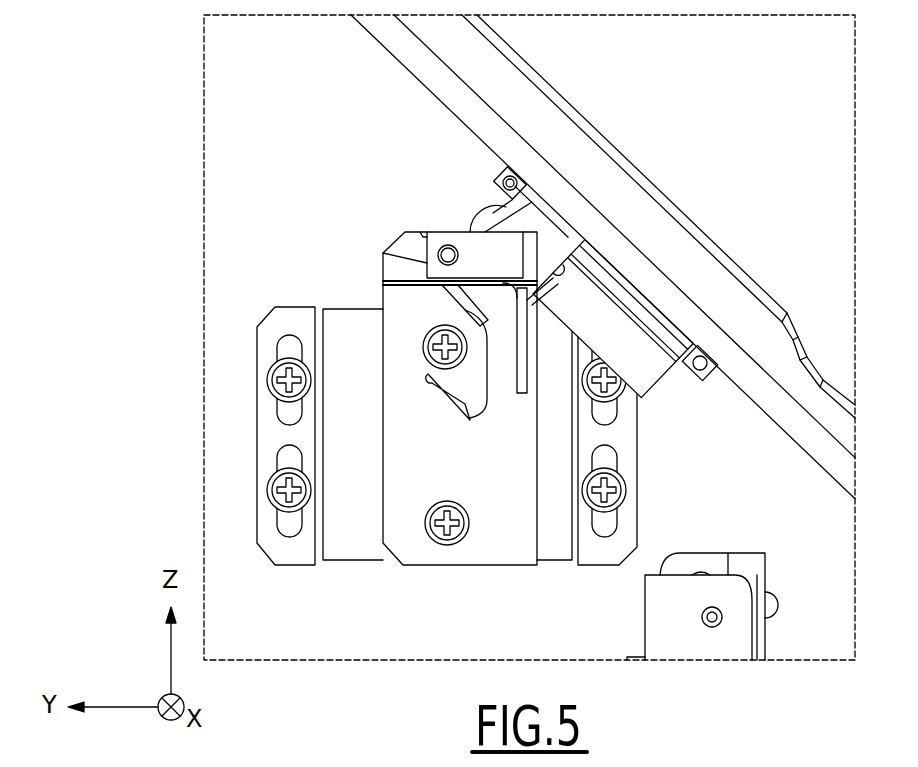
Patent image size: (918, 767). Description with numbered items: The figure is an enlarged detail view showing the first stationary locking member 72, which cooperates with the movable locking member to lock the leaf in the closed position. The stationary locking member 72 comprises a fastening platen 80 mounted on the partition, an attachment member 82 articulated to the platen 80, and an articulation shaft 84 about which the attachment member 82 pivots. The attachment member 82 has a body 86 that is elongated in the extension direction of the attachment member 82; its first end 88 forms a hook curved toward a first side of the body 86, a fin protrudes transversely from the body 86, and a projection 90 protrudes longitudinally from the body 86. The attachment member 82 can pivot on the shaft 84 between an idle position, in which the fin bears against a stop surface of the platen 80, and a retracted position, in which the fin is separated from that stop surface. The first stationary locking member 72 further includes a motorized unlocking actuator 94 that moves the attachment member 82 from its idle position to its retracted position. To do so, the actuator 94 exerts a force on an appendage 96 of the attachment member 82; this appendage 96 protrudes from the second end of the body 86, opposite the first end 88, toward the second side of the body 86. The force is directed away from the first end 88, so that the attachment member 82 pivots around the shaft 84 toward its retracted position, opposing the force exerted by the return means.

The first stationary locking member 72 is at (310, 143).
The fastening platen 80 is at (620, 442).
The attachment member 82 is at (428, 213).
The articulation shaft 84 is at (383, 253).
The body 86 is at (445, 290).
The first end 88 is at (468, 422).
The projection 90 is at (467, 312).
The motorized unlocking actuator 94 is at (647, 294).
The appendage 96 is at (540, 195).